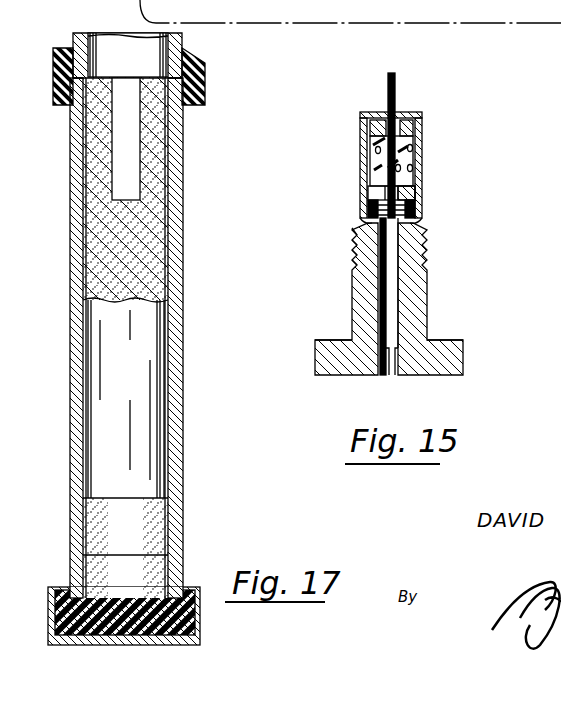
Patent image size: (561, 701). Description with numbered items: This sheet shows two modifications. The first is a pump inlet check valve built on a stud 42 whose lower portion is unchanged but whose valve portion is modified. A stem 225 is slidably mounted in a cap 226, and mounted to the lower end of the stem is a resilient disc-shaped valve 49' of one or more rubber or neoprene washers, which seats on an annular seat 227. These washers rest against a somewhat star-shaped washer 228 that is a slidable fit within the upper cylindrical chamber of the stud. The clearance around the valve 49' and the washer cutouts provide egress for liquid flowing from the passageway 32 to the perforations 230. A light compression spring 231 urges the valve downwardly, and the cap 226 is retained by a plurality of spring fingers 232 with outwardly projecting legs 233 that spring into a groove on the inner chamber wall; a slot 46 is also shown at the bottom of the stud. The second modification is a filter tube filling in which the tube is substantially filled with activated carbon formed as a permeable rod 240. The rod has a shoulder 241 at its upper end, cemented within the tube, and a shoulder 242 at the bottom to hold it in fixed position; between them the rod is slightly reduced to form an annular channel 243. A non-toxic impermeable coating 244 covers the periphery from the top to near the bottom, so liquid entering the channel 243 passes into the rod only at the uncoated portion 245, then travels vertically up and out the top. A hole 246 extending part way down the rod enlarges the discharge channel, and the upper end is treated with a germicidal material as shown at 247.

In FIG. 15, the stem 225 is at (396, 86).
In FIG. 15, the cap 226 is at (410, 115).
In FIG. 15, the annular seat 227 is at (405, 236).
In FIG. 15, the star-shaped washer 228 is at (367, 195).
In FIG. 15, the perforations 230 is at (367, 151).
In FIG. 15, the light compression spring 231 is at (407, 153).
In FIG. 15, the spring fingers 232 is at (423, 127).
In FIG. 15, the outwardly projecting legs 233 is at (377, 137).
In FIG. 15, the resilient disc-shaped valve 49' is at (446, 183).
In FIG. 15, the passageway 32 is at (390, 323).
In FIG. 15, the stud 42 is at (342, 365).
In FIG. 15, the slot 46 is at (387, 360).
In FIG. 17, the permeable rod 240 is at (153, 475).
In FIG. 17, the shoulder 241 is at (183, 126).
In FIG. 17, the shoulder 242 is at (163, 555).
In FIG. 17, the annular channel 243 is at (163, 395).
In FIG. 17, the impermeable coating 244 is at (163, 498).
In FIG. 17, the uncoated portion 245 is at (88, 528).
In FIG. 17, the hole 246 is at (128, 105).
In FIG. 17, the germicidal treated portion 247 is at (90, 227).